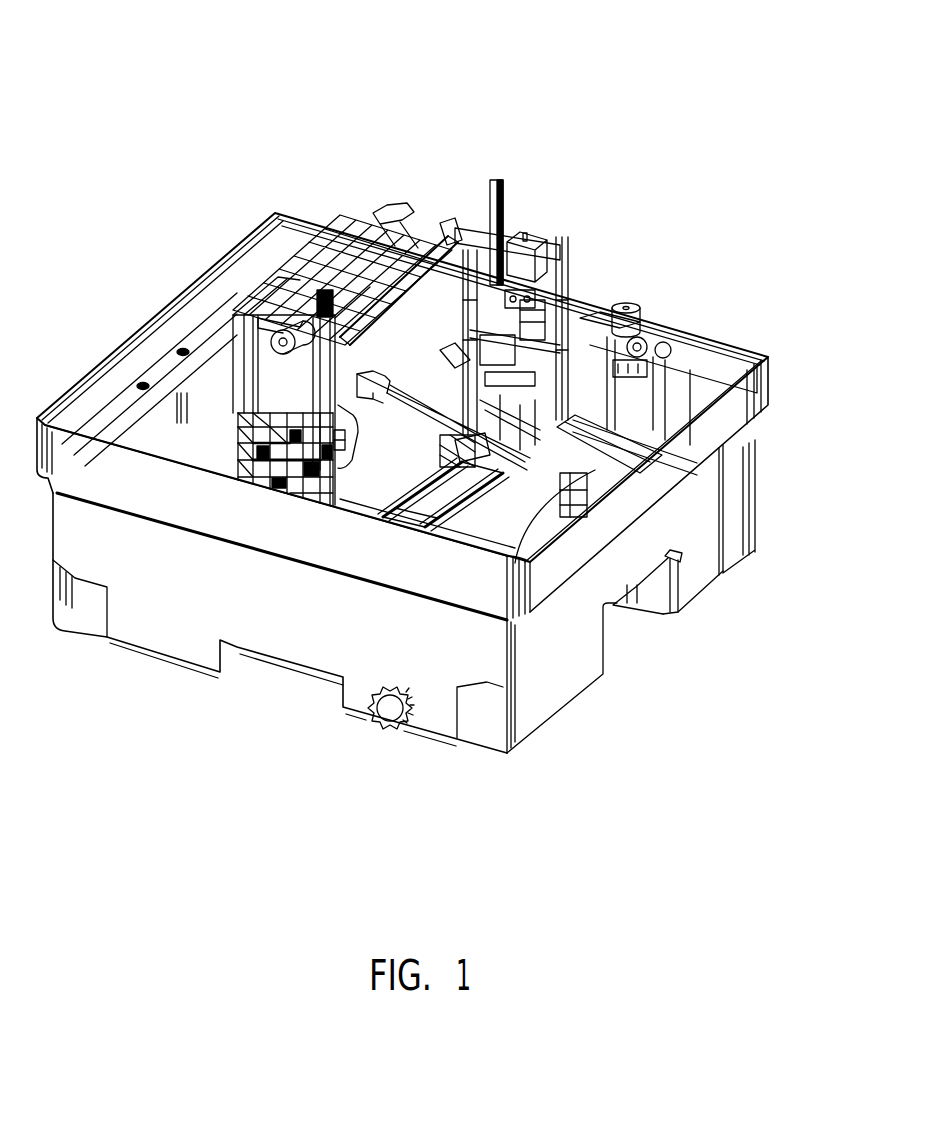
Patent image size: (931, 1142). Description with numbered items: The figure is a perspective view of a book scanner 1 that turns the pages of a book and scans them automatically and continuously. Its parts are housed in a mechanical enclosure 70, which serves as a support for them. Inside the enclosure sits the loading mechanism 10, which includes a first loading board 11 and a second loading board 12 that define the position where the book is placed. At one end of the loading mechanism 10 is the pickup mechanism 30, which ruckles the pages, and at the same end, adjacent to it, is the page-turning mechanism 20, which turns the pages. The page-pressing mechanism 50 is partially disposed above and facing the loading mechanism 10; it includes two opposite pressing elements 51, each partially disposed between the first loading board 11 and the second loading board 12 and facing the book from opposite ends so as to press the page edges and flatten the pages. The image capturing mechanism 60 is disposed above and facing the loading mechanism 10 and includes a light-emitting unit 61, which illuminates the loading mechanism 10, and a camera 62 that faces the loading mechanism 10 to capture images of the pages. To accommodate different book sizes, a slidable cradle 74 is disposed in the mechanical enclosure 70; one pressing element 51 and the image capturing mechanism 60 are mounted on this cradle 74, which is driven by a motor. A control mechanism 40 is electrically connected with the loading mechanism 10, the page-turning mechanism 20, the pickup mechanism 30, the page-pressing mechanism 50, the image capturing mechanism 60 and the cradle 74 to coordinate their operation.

The book scanner 1 is at (74, 40).
The loading mechanism 10 is at (505, 543).
The first loading board 11 is at (222, 407).
The second loading board 12 is at (545, 542).
The page-turning mechanism 20 is at (617, 427).
The pickup mechanism 30 is at (676, 397).
The control mechanism 40 is at (345, 488).
The page-pressing mechanism 50 is at (542, 268).
The pressing element 51 is at (532, 299).
The image capturing mechanism 60 is at (432, 240).
The light-emitting unit 61 is at (400, 215).
The camera 62 is at (430, 242).
The mechanical enclosure 70 is at (548, 690).
The cradle 74 is at (243, 403).